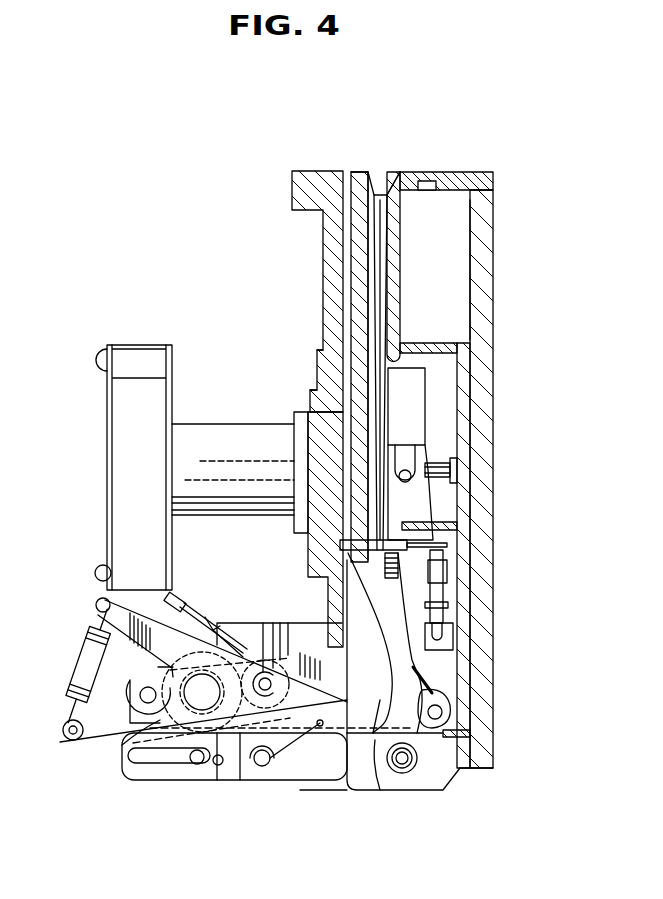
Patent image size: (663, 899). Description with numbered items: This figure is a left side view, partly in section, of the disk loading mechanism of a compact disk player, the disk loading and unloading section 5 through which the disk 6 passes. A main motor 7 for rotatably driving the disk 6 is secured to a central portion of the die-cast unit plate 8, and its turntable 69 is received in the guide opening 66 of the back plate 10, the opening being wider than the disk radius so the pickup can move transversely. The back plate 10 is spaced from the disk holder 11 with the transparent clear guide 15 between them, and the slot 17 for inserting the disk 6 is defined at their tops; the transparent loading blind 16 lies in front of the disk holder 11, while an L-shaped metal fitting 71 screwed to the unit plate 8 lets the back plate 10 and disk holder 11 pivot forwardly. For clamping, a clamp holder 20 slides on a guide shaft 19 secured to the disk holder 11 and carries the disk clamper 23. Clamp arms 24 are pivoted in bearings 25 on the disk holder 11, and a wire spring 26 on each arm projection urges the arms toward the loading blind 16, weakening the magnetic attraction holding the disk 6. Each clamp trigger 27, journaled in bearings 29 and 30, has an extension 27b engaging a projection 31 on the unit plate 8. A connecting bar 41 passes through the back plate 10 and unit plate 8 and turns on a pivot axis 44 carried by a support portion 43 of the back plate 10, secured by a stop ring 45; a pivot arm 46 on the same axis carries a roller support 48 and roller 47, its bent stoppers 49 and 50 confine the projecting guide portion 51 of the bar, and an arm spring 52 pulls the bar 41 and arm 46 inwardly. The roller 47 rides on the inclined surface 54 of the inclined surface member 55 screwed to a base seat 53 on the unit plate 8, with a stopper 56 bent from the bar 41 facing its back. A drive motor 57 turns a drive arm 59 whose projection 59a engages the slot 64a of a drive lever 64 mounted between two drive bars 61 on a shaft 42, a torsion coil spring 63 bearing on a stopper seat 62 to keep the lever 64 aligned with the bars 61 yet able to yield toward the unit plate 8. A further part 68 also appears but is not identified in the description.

The disk loading and unloading section 5 is at (571, 161).
The disk 6 is at (381, 262).
The main motor 7 is at (133, 352).
The unit plate 8 is at (310, 176).
The back plate 10 is at (357, 172).
The disk holder 11 is at (452, 178).
The clear guide 15 is at (390, 178).
The loading blind 16 is at (482, 300).
The slot 17 is at (377, 192).
The guide shaft 19 is at (442, 468).
The clamp holder 20 is at (416, 380).
The disk clamper 23 is at (323, 345).
The clamp arm 24 is at (442, 480).
The bearing 25 is at (446, 712).
The wire spring 26 is at (443, 695).
The clamp trigger 27 is at (444, 604).
The extension 27b is at (442, 546).
The bearing 29 is at (455, 636).
The bearing 30 is at (448, 569).
The projection 31 is at (428, 525).
The connecting bar 41 is at (100, 574).
The shaft 42 is at (272, 770).
The support portion 43 is at (295, 662).
The pivot axis 44 is at (281, 622).
The stop ring 45 is at (267, 662).
The pivot arm 46 is at (68, 740).
The roller 47 is at (146, 695).
The roller support 48 is at (120, 730).
The stopper 49 is at (197, 766).
The stopper 50 is at (125, 612).
The projecting guide portion 51 is at (126, 762).
The arm spring 52 is at (82, 678).
The base seat 53 is at (328, 644).
The inclined surface 54 is at (180, 600).
The inclined surface 55 is at (207, 620).
The stopper 56 is at (218, 626).
The drive motor 57 is at (262, 770).
The drive arm 59 is at (290, 692).
The projection 59a is at (219, 768).
The drive bar 61 is at (362, 792).
The stopper seat 62 is at (345, 782).
The torsion coil spring 63 is at (333, 792).
The drive lever 64 is at (140, 768).
The slot 64a is at (150, 777).
The guide opening 66 is at (336, 382).
The pivot bolt 68 is at (404, 762).
The turntable 69 is at (336, 403).
The L-shaped metal fitting 71 is at (378, 772).